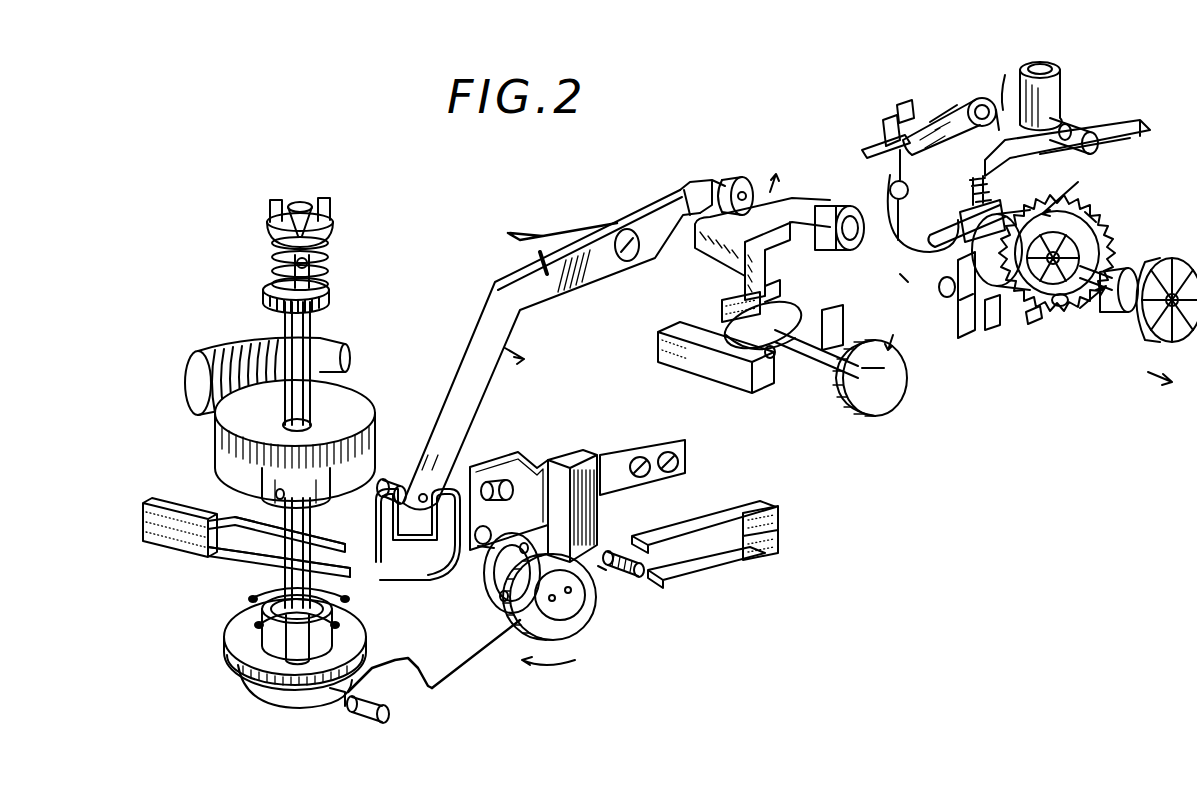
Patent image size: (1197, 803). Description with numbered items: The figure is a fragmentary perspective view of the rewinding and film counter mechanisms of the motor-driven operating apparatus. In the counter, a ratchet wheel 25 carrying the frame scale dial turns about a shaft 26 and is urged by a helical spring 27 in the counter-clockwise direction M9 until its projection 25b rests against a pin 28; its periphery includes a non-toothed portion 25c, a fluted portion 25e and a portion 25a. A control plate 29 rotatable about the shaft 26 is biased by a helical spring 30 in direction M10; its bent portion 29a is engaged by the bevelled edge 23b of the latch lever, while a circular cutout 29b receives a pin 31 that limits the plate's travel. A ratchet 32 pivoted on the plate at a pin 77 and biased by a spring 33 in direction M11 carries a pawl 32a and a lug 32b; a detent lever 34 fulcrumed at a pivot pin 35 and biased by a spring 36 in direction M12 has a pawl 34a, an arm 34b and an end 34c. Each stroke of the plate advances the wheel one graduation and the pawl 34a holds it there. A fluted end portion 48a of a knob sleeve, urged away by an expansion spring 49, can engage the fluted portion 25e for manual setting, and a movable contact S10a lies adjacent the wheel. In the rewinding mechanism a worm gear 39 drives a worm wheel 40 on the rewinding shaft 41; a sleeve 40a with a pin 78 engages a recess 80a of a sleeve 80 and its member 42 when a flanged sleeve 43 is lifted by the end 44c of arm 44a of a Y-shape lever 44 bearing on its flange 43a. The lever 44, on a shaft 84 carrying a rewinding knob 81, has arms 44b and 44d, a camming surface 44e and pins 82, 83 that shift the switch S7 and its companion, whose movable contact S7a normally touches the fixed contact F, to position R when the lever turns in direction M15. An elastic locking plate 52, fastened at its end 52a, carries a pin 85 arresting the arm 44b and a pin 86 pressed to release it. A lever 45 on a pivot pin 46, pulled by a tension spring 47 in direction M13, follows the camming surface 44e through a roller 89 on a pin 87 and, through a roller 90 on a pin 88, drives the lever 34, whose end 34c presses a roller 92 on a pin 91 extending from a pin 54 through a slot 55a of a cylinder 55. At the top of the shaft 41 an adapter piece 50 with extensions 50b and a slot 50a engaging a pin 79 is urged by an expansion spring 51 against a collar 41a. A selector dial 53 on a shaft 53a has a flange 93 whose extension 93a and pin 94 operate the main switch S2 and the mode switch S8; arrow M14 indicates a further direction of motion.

The bevelled edge 23b is at (900, 116).
The ratchet wheel 25 is at (1082, 262).
The gear hub wheel 25a is at (1066, 236).
The projection 25b is at (1062, 306).
The non-toothed portion 25c is at (1000, 300).
The fluted portion 25e is at (1098, 216).
The shaft 26 is at (918, 270).
The helical spring 27 is at (939, 289).
The pin 28 is at (1034, 324).
The control plate 29 is at (876, 150).
The rectangularly bent portion 29a is at (883, 130).
The pivot ring 29b is at (898, 244).
The helical spring 30 is at (987, 190).
The pin 31 is at (895, 186).
The ratchet 32 is at (976, 99).
The pawl 32a is at (908, 226).
The lug 32b is at (918, 125).
The spring 33 is at (950, 96).
The detent lever 34 is at (792, 238).
The pawl 34a is at (1005, 215).
The lever end 34b is at (690, 182).
The lever end 34c is at (1132, 140).
The pivot pin 35 is at (852, 252).
The spring 36 is at (830, 196).
The worm gear 39 is at (198, 398).
The worm wheel 40 is at (332, 382).
The sleeve 40a is at (322, 490).
The rewinding shaft 41 is at (311, 330).
The collar 41a is at (268, 305).
The sleeve 42 is at (352, 622).
The flanged sleeve 43 is at (270, 696).
The flange 43a is at (296, 690).
The Y-shape lever 44 is at (496, 655).
The arm 44a is at (426, 686).
The arm 44b is at (450, 582).
The arm end 44c is at (338, 706).
The arm end 44d is at (604, 574).
The camming surface 44e is at (390, 482).
The lever 45 is at (540, 300).
The pivot pin 46 is at (630, 262).
The tension spring 47 is at (598, 220).
The fluted end portion 48a is at (1128, 270).
The expansion spring 49 is at (1168, 266).
The adapter piece 50 is at (330, 218).
The elongated slot 50a is at (318, 283).
The extensions 50b is at (328, 208).
The expansion spring 51 is at (270, 253).
The elastic locking plate 52 is at (526, 465).
The end of locking plate 52a is at (662, 446).
The selector dial 53 is at (906, 387).
The shaft 53a is at (822, 364).
The pin 54 is at (1040, 66).
The cylinder 55 is at (1056, 88).
The elongated slot 55a is at (1070, 120).
The pin 77 is at (994, 128).
The pin 78 is at (276, 494).
The pin 79 is at (318, 258).
The sleeve 80 is at (258, 650).
The recess 80a is at (258, 606).
The rewinding knob 81 is at (572, 455).
The pin 82 is at (366, 720).
The pin 83 is at (612, 548).
The rotatable shaft 84 is at (513, 546).
The pin 85 is at (484, 552).
The pin 86 is at (505, 478).
The pin 87 is at (475, 533).
The pin 88 is at (742, 177).
The roller 89 is at (420, 490).
The roller 90 is at (713, 178).
The pin 91 is at (1106, 132).
The roller 92 is at (1070, 130).
The flange 93 is at (730, 322).
The extension 93a is at (780, 288).
The pin 94 is at (774, 358).
The main switch S2 is at (676, 362).
The switch S7 is at (181, 569).
The movable contact S7a is at (340, 563).
The switch S8 is at (858, 300).
The movable contact S10a is at (968, 340).
The fixed contact R is at (310, 542).
The fixed contact F is at (322, 568).
The direction arrow M9 is at (1093, 314).
The direction arrow M10 is at (900, 282).
The direction arrow M11 is at (998, 77).
The direction arrow M12 is at (782, 168).
The direction arrow M13 is at (540, 373).
The motion arrow M14 is at (1172, 385).
The direction arrow M15 is at (548, 668).